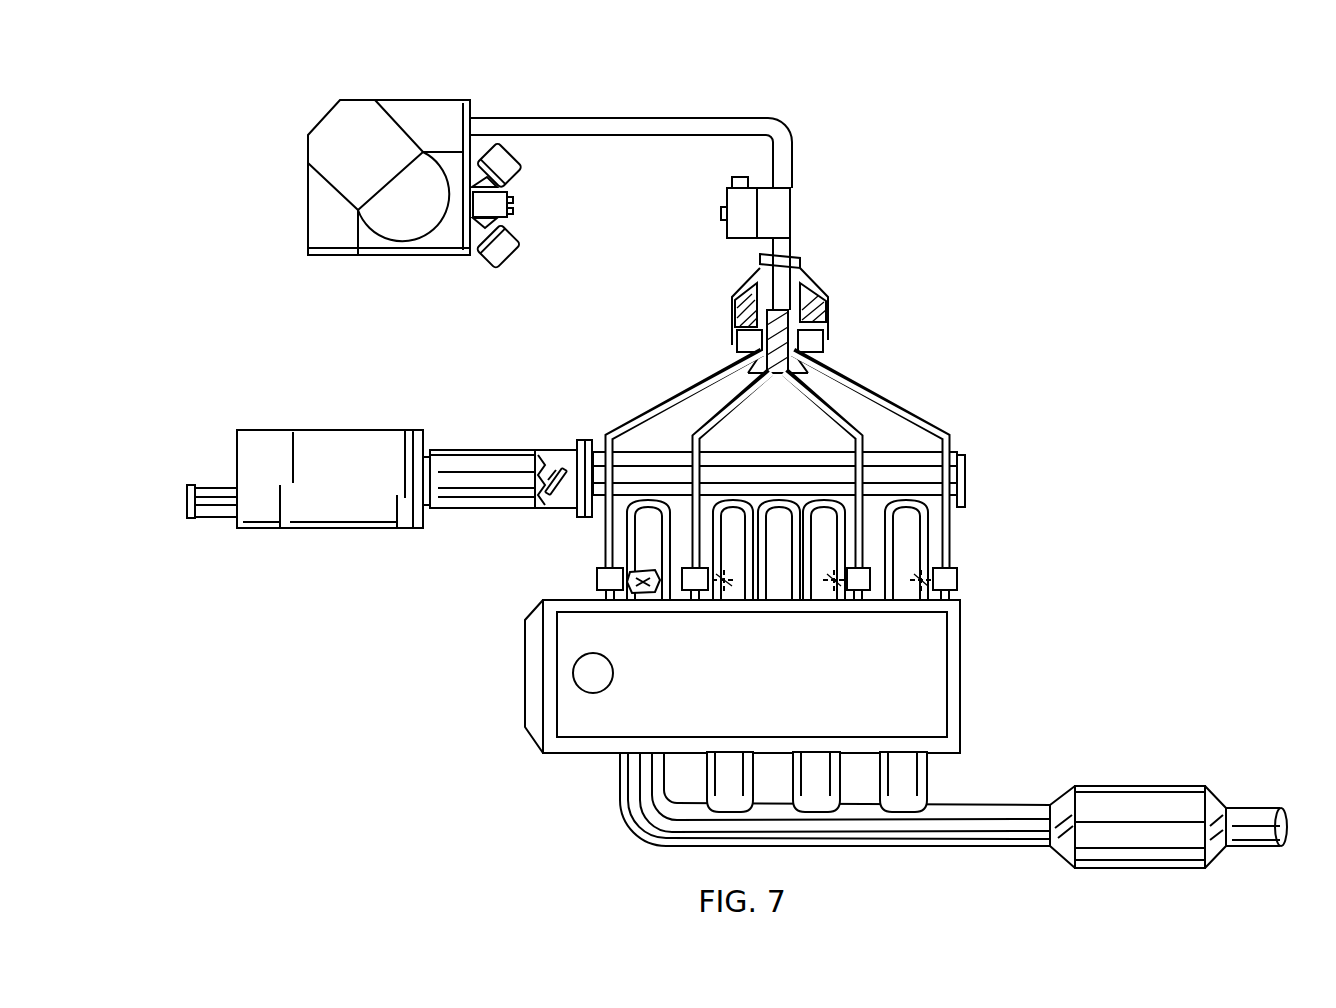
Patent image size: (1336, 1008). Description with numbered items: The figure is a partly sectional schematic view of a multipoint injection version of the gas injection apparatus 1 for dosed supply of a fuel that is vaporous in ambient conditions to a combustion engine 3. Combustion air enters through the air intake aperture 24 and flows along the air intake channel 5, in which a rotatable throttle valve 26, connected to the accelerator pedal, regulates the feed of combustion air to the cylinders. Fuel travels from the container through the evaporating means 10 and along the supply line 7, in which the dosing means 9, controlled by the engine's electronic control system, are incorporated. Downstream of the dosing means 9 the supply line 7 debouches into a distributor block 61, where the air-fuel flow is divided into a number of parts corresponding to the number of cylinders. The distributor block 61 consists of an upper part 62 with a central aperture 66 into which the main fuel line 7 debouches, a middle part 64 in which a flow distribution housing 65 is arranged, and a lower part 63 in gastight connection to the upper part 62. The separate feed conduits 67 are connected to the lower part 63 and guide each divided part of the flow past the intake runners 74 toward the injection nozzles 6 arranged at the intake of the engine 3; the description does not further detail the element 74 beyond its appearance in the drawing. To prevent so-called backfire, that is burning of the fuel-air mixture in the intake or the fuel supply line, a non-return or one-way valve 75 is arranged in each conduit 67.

The apparatus 1 is at (864, 227).
The combustion engine 3 is at (522, 672).
The air intake channel 5 is at (500, 465).
The injection nozzle 6 is at (648, 597).
The supply line 7 is at (720, 118).
The dosing means 9 is at (793, 197).
The evaporating means 10 is at (318, 118).
The air intake aperture 24 is at (188, 490).
The throttle valve 26 is at (550, 462).
The distributor block 61 is at (793, 297).
The upper part 62 is at (765, 261).
The lower part 63 is at (822, 345).
The middle part 64 is at (826, 333).
The flow distribution housing 65 is at (738, 352).
The central aperture 66 is at (807, 274).
The feed conduits 67 is at (680, 398).
The intake runners 74 is at (637, 530).
The non-return valve 75 is at (597, 580).